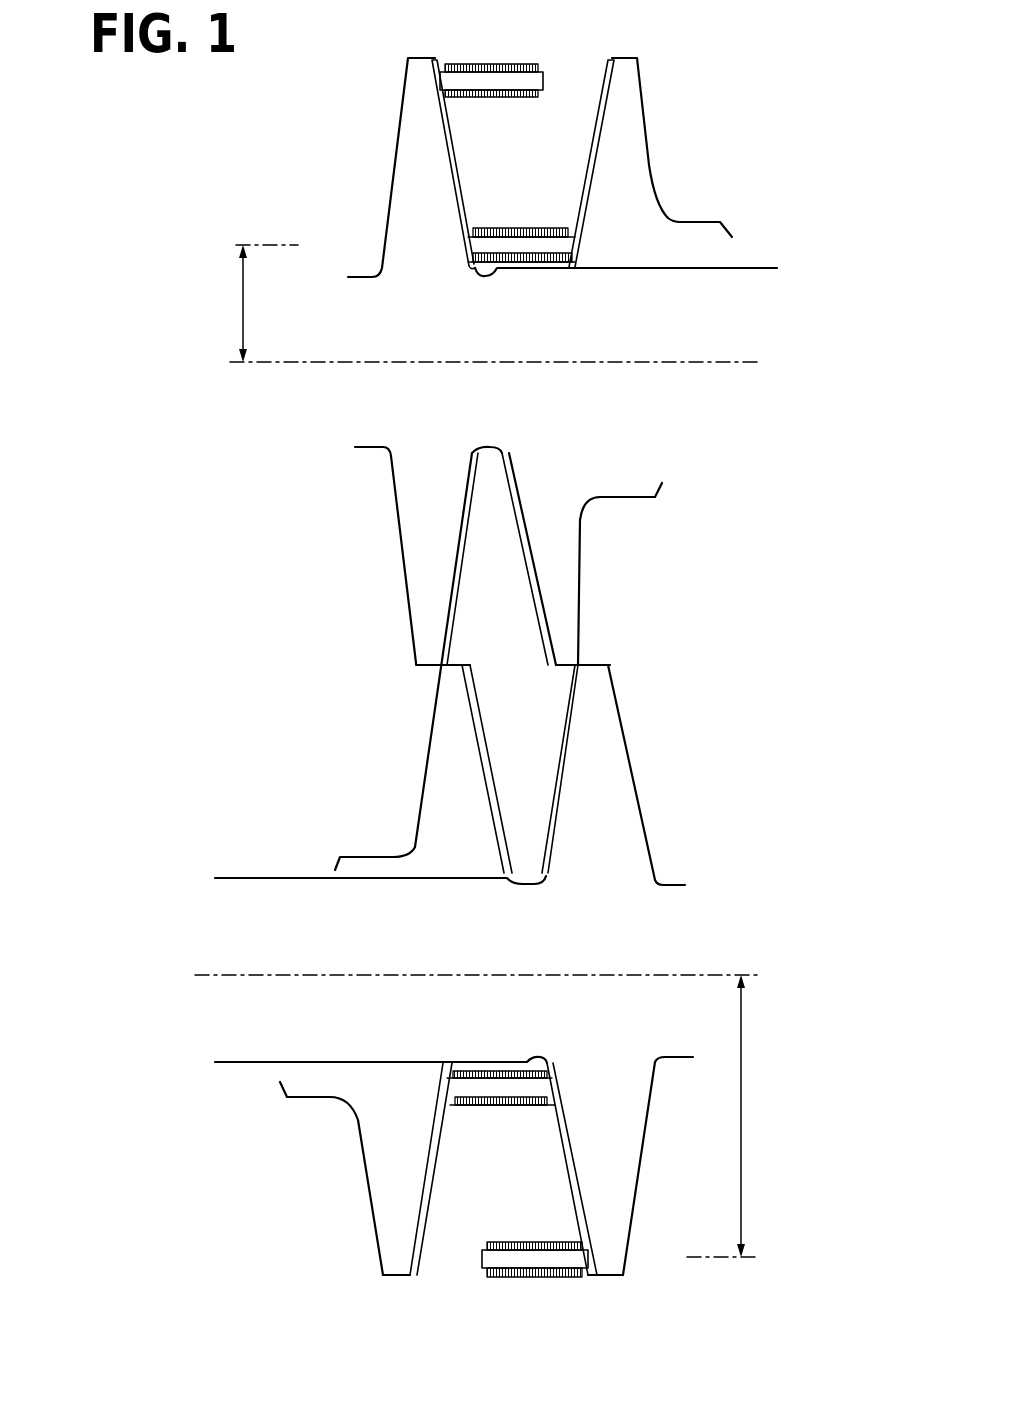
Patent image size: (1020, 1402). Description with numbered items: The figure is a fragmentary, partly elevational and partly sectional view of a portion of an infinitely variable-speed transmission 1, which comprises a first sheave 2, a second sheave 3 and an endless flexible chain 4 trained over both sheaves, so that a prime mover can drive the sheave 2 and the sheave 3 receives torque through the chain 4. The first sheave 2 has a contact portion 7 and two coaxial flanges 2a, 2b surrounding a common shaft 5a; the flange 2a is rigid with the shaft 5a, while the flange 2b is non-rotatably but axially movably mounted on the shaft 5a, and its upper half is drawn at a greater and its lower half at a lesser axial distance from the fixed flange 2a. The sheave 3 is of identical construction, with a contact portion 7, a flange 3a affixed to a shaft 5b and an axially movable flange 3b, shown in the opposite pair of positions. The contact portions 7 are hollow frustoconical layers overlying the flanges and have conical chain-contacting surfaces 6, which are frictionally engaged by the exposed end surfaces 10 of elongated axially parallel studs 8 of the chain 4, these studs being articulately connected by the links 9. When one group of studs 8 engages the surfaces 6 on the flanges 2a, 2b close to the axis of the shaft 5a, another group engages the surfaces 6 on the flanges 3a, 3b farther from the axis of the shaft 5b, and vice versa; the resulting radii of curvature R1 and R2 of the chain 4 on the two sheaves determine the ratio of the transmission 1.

The infinitely variable-speed transmission 1 is at (311, 138).
The first sheave 2 is at (667, 126).
The flange 2a is at (408, 218).
The flange 2b is at (560, 578).
The second sheave 3 is at (682, 755).
The flange 3a is at (628, 857).
The flange 3b is at (442, 810).
The chain 4 is at (527, 1277).
The shaft 5a is at (705, 320).
The shaft 5b is at (265, 1012).
The chain-contacting exposed surfaces 6 is at (515, 570).
The contact portion 7 is at (432, 53).
The contact portions (studs) 8 is at (520, 78).
The links 9 is at (482, 63).
The end surfaces 10 is at (465, 1267).
The radius R1 is at (243, 300).
The radius R2 is at (742, 1107).